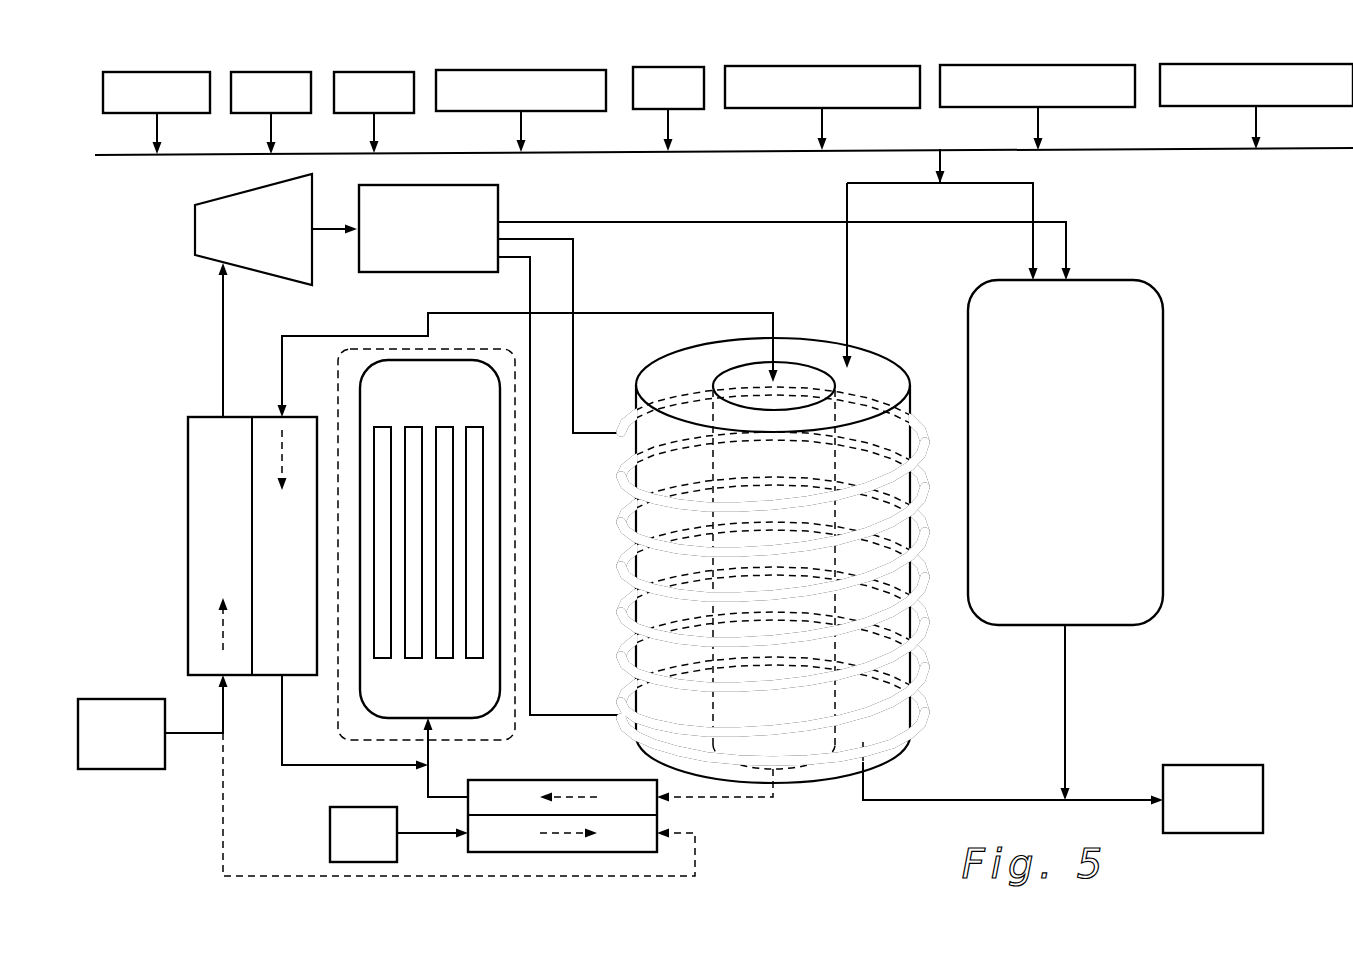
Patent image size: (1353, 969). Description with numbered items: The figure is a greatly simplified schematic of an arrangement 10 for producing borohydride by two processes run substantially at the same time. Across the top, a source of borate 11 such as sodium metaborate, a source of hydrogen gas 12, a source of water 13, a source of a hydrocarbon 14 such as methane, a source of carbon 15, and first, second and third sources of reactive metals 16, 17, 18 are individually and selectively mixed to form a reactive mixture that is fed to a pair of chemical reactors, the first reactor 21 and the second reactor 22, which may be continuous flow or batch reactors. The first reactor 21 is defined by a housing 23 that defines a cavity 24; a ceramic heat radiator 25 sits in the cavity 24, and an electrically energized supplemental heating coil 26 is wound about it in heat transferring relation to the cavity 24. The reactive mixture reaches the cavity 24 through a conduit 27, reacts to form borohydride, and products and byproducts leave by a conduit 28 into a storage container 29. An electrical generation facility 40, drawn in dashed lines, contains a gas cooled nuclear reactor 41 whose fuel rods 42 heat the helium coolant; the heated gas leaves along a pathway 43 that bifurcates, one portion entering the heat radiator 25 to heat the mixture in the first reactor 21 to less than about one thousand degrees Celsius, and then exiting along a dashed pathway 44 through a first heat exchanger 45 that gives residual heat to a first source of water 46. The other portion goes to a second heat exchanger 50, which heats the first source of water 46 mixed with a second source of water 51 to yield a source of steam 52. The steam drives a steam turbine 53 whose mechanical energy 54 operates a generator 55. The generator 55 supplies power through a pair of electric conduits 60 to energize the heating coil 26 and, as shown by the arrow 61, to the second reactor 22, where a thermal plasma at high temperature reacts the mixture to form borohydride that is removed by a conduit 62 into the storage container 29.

The arrangement 10 is at (1220, 243).
The source of borate 11 is at (157, 72).
The source of hydrogen gas 12 is at (265, 72).
The source of water 13 is at (370, 72).
The source of a hydrocarbon 14 is at (520, 70).
The source of carbon 15 is at (670, 67).
The first source of reactive metal 16 is at (825, 66).
The second source of reactive metal 17 is at (1025, 65).
The third source of reactive metal 18 is at (1280, 64).
The first reactor 21 is at (762, 513).
The second reactor 22 is at (1170, 381).
The housing 23 is at (658, 368).
The cavity 24 is at (872, 394).
The heat radiator 25 is at (795, 377).
The supplemental heating coil 26 is at (621, 617).
The conduit 27 is at (847, 258).
The conduit 28 is at (930, 800).
The storage container 29 is at (1213, 799).
The electrical generation facility 40 is at (516, 502).
The nuclear reactor 41 is at (355, 673).
The fuel rods 42 is at (445, 427).
The pathway 43 is at (338, 326).
The pathway 44 is at (322, 770).
The first heat exchanger 45 is at (506, 780).
The first source of water 46 is at (399, 834).
The second heat exchanger 50 is at (187, 527).
The second source of water 51 is at (386, 775).
The source of steam 52 is at (222, 341).
The steam turbine 53 is at (253, 229).
The mechanical energy 54 is at (327, 228).
The generator 55 is at (428, 228).
The electric conduits 60 is at (532, 268).
The arrow 61 is at (1048, 216).
The conduit 62 is at (1066, 673).